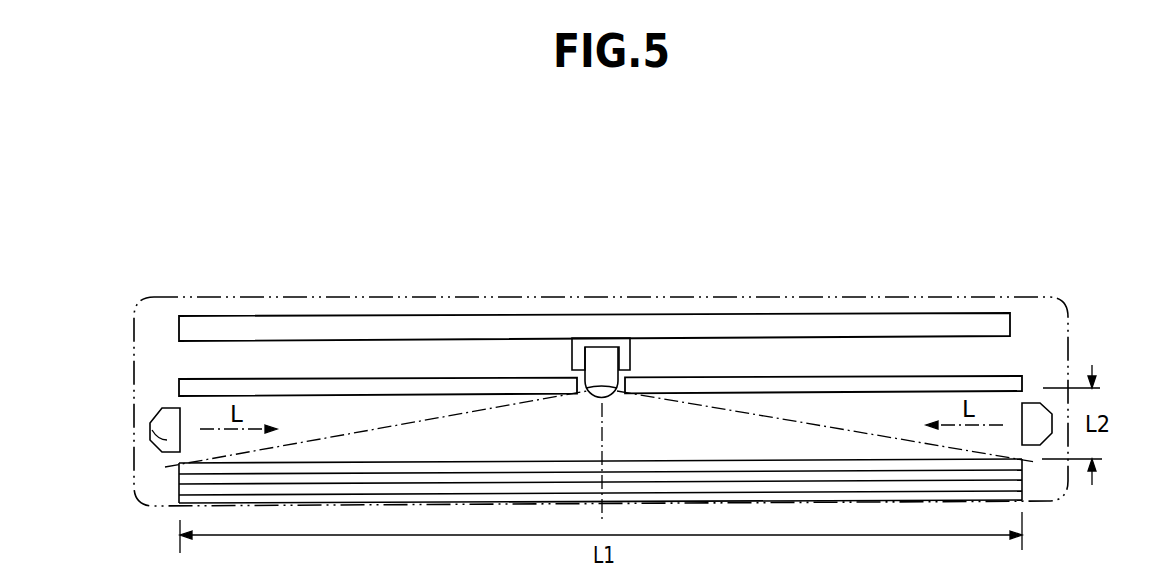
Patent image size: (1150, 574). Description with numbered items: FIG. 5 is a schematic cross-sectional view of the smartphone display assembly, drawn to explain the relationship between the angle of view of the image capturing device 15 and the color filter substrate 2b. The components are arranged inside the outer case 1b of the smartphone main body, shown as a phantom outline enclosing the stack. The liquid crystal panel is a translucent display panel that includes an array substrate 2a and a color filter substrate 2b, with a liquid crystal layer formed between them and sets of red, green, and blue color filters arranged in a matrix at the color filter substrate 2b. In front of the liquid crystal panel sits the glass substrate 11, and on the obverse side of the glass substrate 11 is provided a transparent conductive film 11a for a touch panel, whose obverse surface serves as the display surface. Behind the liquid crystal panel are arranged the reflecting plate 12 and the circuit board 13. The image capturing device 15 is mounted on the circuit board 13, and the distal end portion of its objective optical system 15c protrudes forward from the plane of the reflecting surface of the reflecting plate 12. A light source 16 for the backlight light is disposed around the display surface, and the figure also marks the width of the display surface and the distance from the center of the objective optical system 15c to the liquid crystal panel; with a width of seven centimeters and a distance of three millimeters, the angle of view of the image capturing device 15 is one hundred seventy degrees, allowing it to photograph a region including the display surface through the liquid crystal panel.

The outer case 1b is at (875, 296).
The circuit board 13 is at (967, 313).
The reflecting plate 12 is at (1023, 381).
The image capturing device 15 is at (566, 357).
The objective optical system 15c is at (614, 383).
The light source 16 is at (150, 423).
The glass substrate 11 is at (597, 509).
The transparent conductive film 11a is at (180, 503).
The array substrate 2a is at (1023, 461).
The color filter substrate 2b is at (1023, 478).